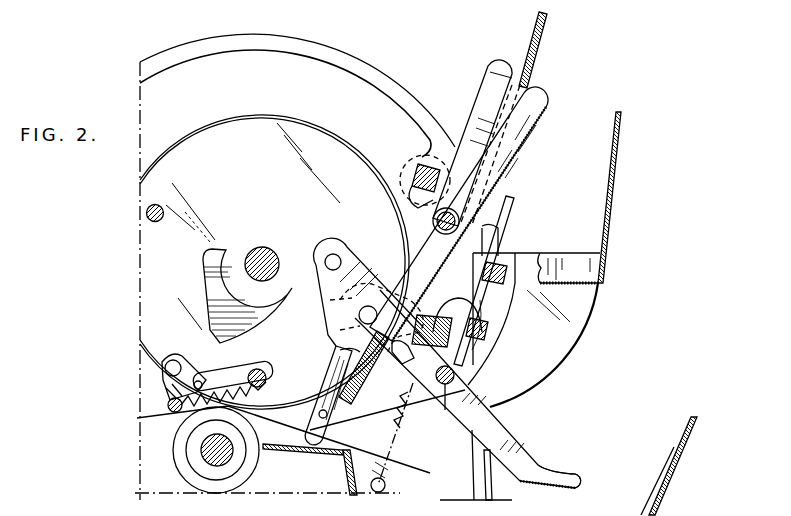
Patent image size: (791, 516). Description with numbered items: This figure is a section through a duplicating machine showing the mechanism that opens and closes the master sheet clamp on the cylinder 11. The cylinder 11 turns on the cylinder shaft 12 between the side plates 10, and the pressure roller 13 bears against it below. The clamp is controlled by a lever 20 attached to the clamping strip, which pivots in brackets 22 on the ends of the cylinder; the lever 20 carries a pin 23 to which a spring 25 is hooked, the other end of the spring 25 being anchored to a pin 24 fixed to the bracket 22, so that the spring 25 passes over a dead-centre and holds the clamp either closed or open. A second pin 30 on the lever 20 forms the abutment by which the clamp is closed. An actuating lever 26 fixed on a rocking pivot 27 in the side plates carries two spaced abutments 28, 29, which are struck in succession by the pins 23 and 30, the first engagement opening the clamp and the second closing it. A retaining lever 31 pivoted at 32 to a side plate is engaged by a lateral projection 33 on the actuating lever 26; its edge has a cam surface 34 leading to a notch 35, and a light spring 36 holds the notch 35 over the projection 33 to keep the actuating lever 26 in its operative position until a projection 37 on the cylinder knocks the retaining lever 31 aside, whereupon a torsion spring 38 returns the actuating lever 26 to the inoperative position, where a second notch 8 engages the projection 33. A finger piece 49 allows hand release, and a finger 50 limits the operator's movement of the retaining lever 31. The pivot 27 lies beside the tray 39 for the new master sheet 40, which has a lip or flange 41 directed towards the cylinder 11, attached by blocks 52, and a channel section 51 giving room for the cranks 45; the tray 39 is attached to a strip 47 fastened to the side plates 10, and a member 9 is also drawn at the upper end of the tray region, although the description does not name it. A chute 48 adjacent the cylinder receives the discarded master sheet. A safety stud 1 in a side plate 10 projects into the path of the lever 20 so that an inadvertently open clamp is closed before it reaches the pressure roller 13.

The safety stud 1 is at (155, 204).
The second notch 8 is at (406, 352).
The rod 9 is at (533, 46).
The side plates 10 is at (208, 48).
The cylinder 11 is at (248, 132).
The cylinder shaft 12 is at (260, 256).
The pressure roller 13 is at (200, 442).
The lever 20 is at (192, 367).
The brackets 22 is at (238, 372).
The pin 23 is at (168, 404).
The pin 24 is at (262, 372).
The spring 25 is at (168, 384).
The actuating lever 26 is at (514, 140).
The pivot 27 is at (432, 216).
The abutment 28 is at (308, 422).
The abutment 29 is at (348, 331).
The pin 30 is at (172, 360).
The retaining lever 31 is at (494, 412).
The pivot 32 is at (445, 410).
The lateral projection 33 is at (372, 304).
The cam surface 34 is at (380, 352).
The notch 35 is at (360, 313).
The light spring 36 is at (405, 412).
The projection 37 is at (228, 297).
The torsion spring 38 is at (415, 176).
The tray 39 is at (490, 104).
The master sheet 40 is at (520, 62).
The lip or flange 41 is at (440, 324).
The cranks 45 is at (435, 280).
The strip 47 is at (500, 260).
The chute 48 is at (538, 366).
The finger piece 49 is at (548, 474).
The finger 50 is at (344, 352).
The channel section 51 is at (500, 297).
The blocks 52 is at (476, 346).